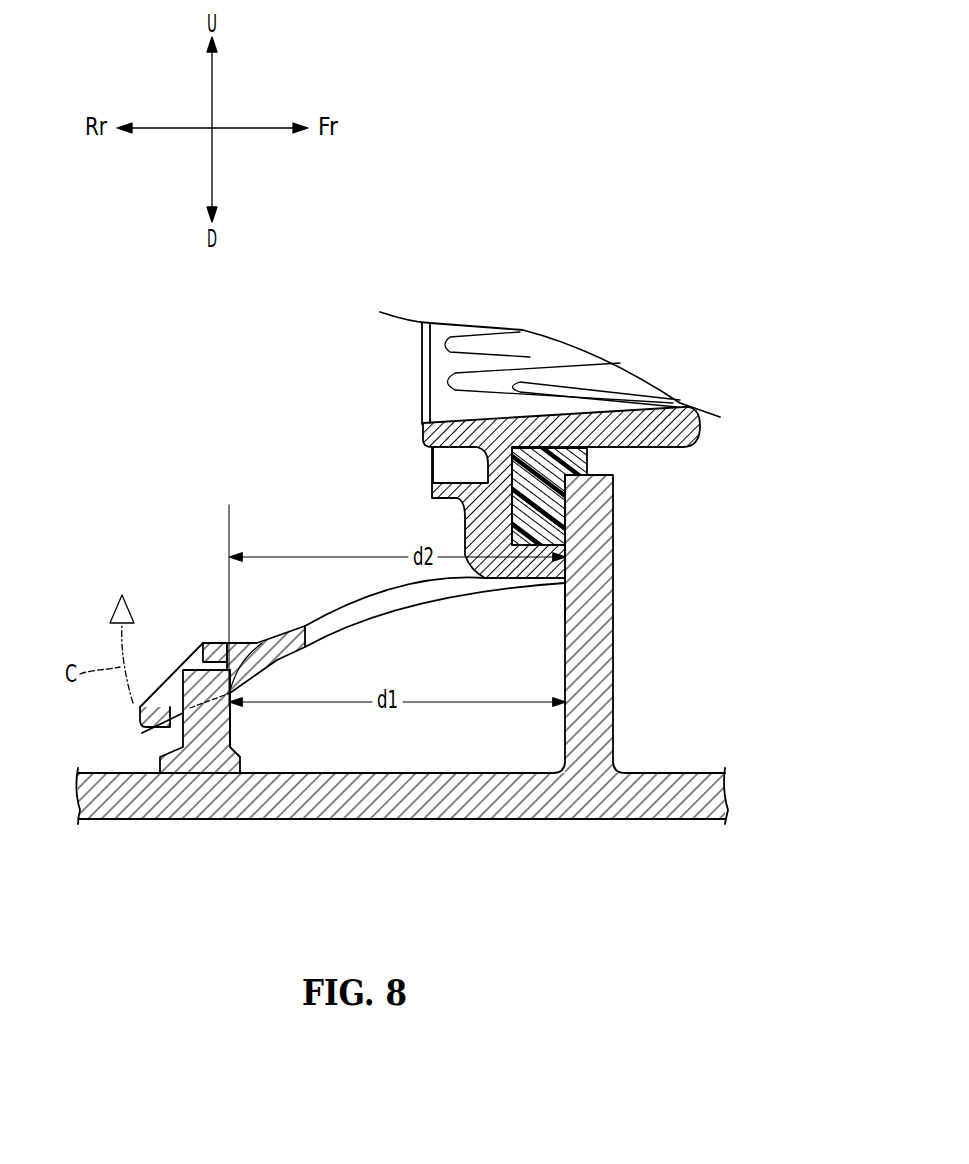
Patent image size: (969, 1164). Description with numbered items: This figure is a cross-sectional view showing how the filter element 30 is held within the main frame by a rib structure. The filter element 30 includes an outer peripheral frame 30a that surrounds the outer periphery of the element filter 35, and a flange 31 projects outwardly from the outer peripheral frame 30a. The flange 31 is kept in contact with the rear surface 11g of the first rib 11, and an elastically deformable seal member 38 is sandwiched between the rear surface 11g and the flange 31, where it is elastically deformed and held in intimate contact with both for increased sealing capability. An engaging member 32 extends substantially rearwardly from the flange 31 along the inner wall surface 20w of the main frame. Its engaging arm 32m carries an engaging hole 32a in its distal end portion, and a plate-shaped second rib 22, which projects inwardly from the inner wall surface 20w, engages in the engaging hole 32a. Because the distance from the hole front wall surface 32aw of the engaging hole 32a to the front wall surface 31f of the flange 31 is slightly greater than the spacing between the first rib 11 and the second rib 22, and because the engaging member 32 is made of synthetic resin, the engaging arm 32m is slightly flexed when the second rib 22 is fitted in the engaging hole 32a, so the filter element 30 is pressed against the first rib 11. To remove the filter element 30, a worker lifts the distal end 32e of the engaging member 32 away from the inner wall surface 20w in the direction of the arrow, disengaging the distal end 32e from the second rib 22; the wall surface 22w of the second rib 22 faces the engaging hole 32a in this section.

The first rib 11 is at (409, 649).
The rear surface 11g is at (528, 590).
The inner wall surface 20w is at (396, 762).
The second rib 22 is at (301, 659).
The post wall surface 22w is at (336, 720).
The filter element 30 is at (570, 519).
The outer peripheral frame 30a is at (641, 506).
The flange 31 is at (572, 442).
The front wall surface 31f is at (624, 604).
The engaging member 32 is at (297, 621).
The engaging hole 32a is at (183, 649).
The hole front wall surface 32aw is at (266, 629).
The distal end 32e is at (100, 731).
The engaging arm 32m is at (435, 568).
The element filter 35 is at (550, 330).
The seal member 38 is at (561, 442).